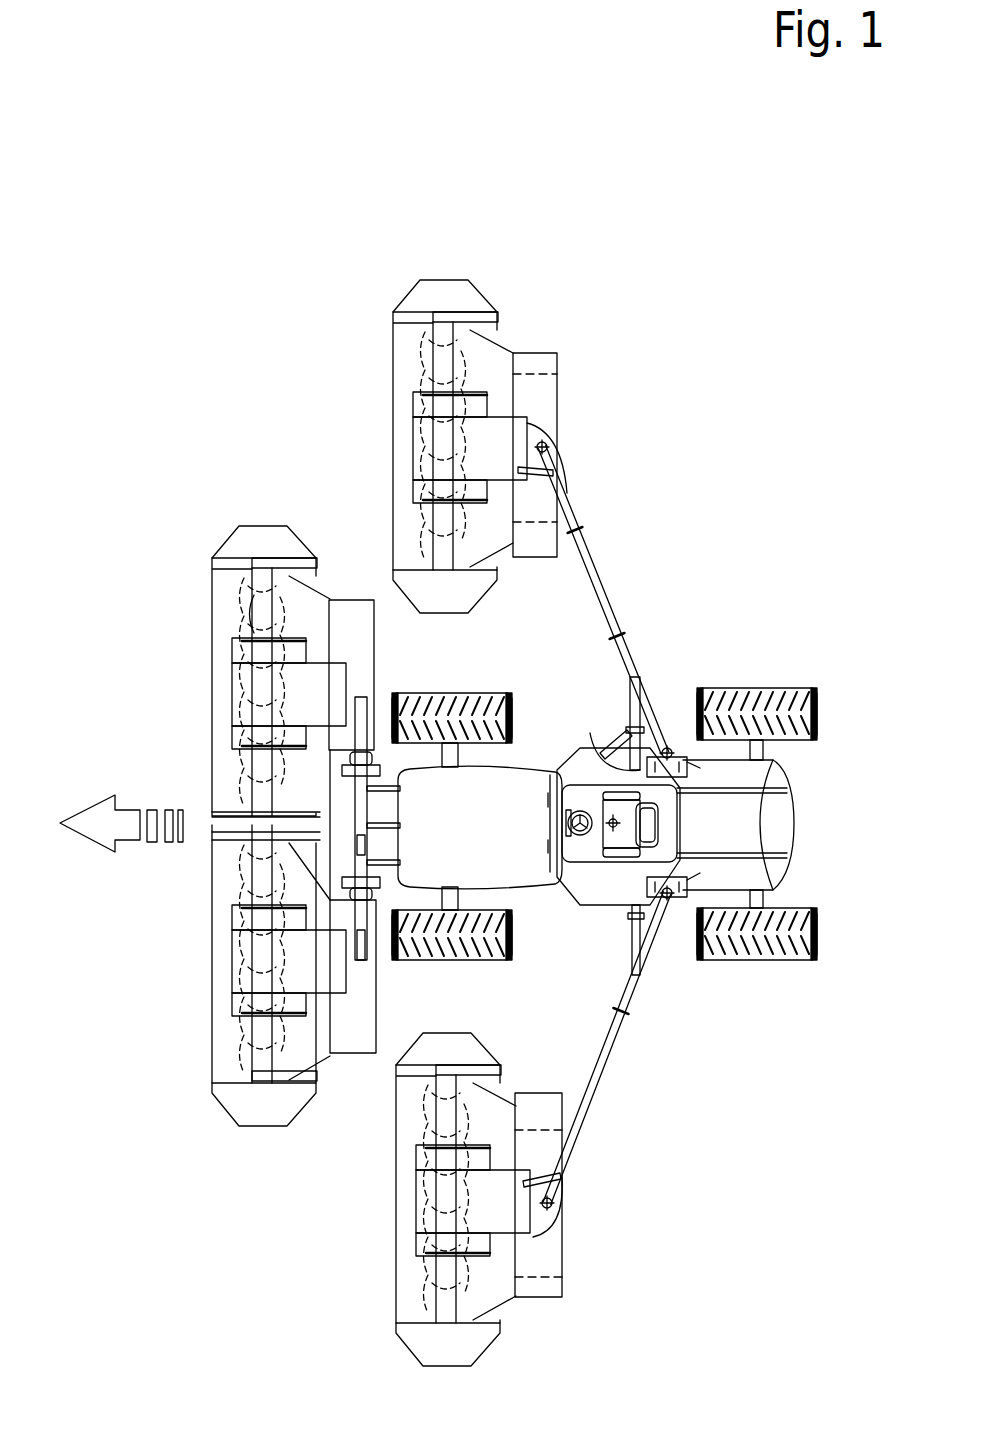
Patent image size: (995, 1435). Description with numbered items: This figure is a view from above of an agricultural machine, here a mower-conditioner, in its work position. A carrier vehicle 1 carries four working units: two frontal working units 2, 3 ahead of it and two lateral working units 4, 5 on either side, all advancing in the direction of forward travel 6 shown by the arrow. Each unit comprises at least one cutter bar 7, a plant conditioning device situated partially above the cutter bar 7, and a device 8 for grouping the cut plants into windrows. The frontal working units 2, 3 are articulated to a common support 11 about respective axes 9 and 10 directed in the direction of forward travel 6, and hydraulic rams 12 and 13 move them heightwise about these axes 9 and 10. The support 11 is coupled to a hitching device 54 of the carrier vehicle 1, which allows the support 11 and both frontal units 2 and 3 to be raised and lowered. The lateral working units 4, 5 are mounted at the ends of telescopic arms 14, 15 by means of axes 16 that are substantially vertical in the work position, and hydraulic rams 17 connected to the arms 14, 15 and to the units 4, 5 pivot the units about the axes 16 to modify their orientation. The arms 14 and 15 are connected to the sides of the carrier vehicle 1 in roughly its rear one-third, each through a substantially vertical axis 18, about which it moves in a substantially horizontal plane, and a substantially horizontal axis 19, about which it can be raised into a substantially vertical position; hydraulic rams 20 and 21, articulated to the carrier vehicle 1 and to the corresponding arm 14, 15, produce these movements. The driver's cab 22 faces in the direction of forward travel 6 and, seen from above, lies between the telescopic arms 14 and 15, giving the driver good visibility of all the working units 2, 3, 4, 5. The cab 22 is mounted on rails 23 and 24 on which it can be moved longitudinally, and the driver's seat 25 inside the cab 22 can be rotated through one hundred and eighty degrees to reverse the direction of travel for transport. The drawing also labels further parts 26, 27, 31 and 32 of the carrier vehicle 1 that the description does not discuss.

The carrier vehicle 1 is at (778, 818).
The frontal working unit 2 is at (247, 648).
The frontal working unit 3 is at (218, 970).
The lateral working unit 4 is at (405, 1237).
The lateral working unit 5 is at (400, 417).
The direction of forward travel 6 is at (95, 812).
The cutter bar 7 is at (235, 610).
The device for grouping cut plants into windrows 8 is at (545, 357).
The axis 9 is at (380, 883).
The axis 10 is at (380, 767).
The common support 11 is at (358, 845).
The hydraulic ram 12 is at (366, 698).
The hydraulic ram 13 is at (368, 945).
The telescopic arm 14 is at (595, 582).
The telescopic arm 15 is at (607, 1057).
The axis 16 is at (548, 445).
The hydraulic ram 17 is at (557, 488).
The substantially vertical axis 18 is at (668, 747).
The substantially horizontal axis 19 is at (690, 768).
The hydraulic ram 20 is at (612, 747).
The hydraulic ram 21 is at (630, 700).
The driver's cab 22 is at (607, 890).
The rail 23 is at (790, 785).
The rail 24 is at (780, 862).
The driver's seat 25 is at (590, 855).
The front wheel 26 is at (482, 690).
The front wheel 27 is at (485, 960).
The rear wheel 31 is at (802, 687).
The rear wheel 32 is at (807, 958).
The hitching device 54 is at (380, 823).